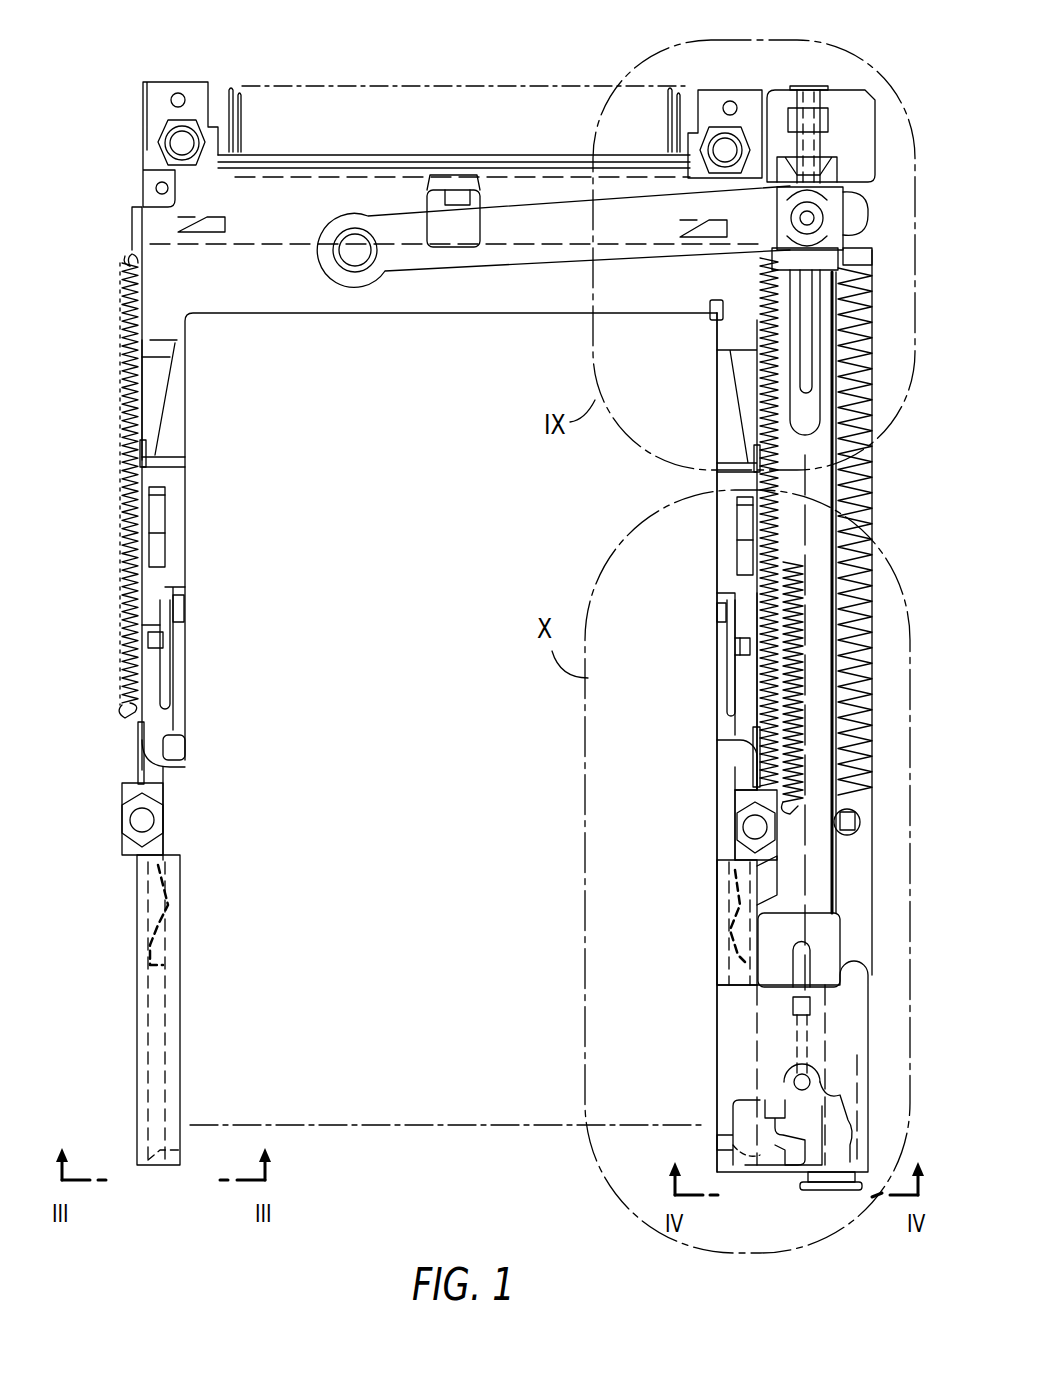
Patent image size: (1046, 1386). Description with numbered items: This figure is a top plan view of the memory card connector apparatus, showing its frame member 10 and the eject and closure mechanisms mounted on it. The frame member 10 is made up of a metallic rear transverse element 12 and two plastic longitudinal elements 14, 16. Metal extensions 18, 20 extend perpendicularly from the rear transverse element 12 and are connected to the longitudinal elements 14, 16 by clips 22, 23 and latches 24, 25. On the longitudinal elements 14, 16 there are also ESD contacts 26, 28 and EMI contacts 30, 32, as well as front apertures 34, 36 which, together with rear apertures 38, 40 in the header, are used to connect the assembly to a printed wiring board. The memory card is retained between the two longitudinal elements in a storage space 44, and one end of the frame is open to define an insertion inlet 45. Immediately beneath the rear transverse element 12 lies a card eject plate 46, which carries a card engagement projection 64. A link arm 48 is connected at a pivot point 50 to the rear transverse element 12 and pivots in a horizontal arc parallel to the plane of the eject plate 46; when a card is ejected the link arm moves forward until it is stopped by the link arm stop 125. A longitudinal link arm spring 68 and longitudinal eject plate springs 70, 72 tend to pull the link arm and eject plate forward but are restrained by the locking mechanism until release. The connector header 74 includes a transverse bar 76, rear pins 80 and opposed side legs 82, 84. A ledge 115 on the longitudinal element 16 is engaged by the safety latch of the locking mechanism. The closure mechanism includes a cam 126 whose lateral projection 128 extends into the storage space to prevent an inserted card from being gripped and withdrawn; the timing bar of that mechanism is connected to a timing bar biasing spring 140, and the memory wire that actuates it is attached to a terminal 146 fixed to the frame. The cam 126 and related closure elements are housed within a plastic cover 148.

The frame member 10 is at (116, 62).
The rear transverse element 12 is at (252, 280).
The longitudinal element 14 is at (133, 913).
The longitudinal element 16 is at (707, 900).
The metal extension 18 is at (154, 283).
The metal extension 20 is at (748, 292).
The clip 22 is at (155, 523).
The clip 23 is at (743, 510).
The latch 24 is at (160, 637).
The latch 25 is at (740, 645).
The ESD contact 26 is at (183, 604).
The ESD contact 28 is at (718, 606).
The EMI contact 30 is at (180, 928).
The EMI contact 32 is at (712, 950).
The front aperture 34 is at (148, 820).
The front aperture 36 is at (747, 820).
The rear aperture 38 is at (180, 135).
The rear aperture 40 is at (720, 142).
The storage space 44 is at (380, 712).
The insertion inlet 45 is at (365, 1146).
The card eject plate 46 is at (252, 178).
The link arm 48 is at (513, 247).
The pivot point 50 is at (358, 278).
The card engagement projection 64 is at (873, 527).
The link arm spring 68 is at (873, 483).
The eject plate spring 70 is at (122, 458).
The eject plate spring 72 is at (758, 550).
The connector header 74 is at (365, 150).
The transverse bar 76 is at (505, 163).
The rear pin 80 is at (233, 86).
The side leg 82 is at (148, 378).
The side leg 84 is at (748, 388).
The ledge 115 is at (825, 113).
The link arm stop 125 is at (710, 300).
The cam 126 is at (740, 1147).
The lateral projection 128 is at (750, 1165).
The timing bar biasing spring 140 is at (780, 747).
The terminal 146 is at (823, 92).
The plastic cover 148 is at (717, 1065).